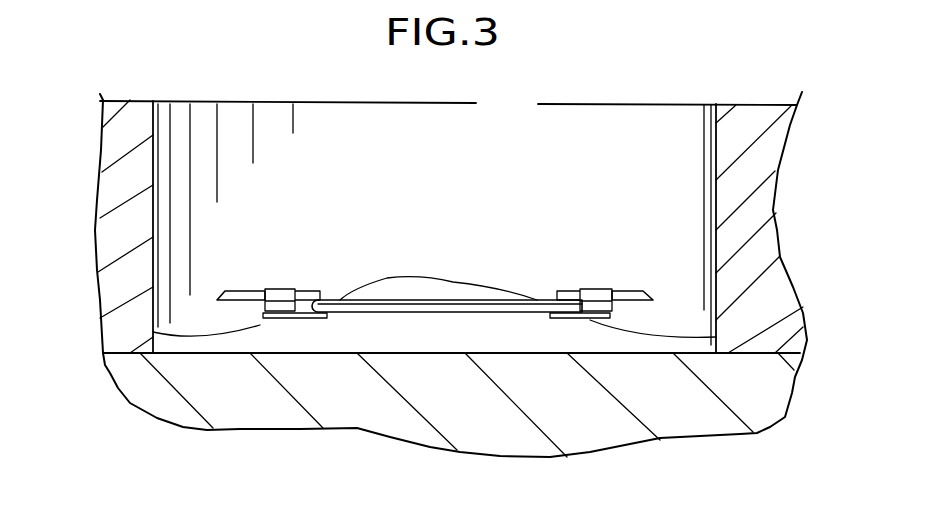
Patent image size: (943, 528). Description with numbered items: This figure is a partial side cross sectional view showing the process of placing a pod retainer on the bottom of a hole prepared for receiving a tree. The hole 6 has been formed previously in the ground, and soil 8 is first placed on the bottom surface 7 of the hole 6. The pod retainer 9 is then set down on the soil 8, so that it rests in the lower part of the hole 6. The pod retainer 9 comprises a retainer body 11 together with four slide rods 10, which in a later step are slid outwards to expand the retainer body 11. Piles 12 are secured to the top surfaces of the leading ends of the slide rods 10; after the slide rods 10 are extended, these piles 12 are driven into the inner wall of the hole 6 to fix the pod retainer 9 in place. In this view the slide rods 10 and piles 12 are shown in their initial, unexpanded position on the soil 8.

The hole 6 is at (489, 234).
The bottom surface 7 is at (355, 353).
The soil 8 is at (400, 337).
The pod retainer 9 is at (500, 313).
The slide rods 10 is at (267, 310).
The retainer body 11 is at (440, 312).
The piles 12 is at (238, 291).